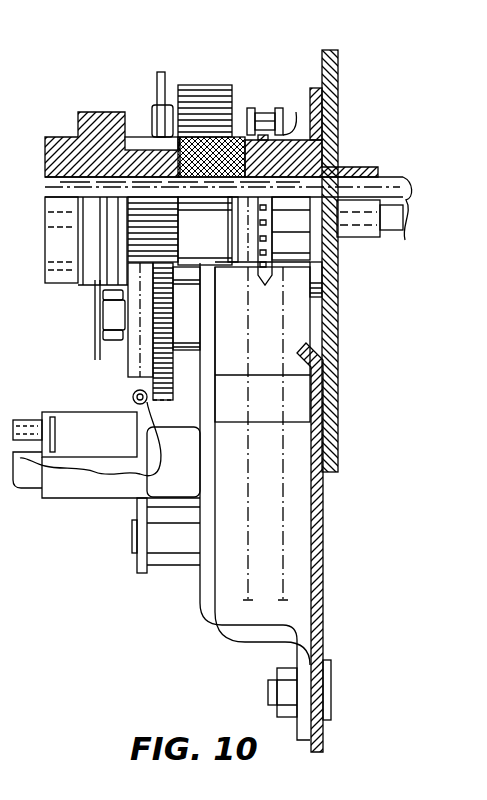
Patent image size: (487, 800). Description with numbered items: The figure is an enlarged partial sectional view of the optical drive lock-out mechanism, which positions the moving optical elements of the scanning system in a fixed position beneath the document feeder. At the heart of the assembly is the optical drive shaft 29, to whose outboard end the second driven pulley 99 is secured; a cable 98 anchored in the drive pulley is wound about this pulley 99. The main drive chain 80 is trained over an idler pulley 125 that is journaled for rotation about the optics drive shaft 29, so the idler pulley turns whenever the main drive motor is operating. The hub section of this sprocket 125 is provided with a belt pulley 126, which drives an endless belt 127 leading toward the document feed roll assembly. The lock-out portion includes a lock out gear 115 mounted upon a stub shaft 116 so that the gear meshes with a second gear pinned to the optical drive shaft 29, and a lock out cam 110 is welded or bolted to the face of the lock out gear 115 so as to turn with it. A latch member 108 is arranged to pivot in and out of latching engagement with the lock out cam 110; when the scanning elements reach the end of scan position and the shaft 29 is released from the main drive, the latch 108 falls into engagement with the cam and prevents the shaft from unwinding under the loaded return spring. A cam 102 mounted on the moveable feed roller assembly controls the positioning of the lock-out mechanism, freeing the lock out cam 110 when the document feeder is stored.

The optical drive shaft 29 is at (228, 217).
The main drive chain 80 is at (257, 108).
The cable 98 is at (100, 305).
The second driven pulley 99 is at (78, 125).
The cam 102 is at (157, 93).
The latch member 108 is at (78, 412).
The lock out cam 110 is at (127, 365).
The lock out gear 115 is at (168, 386).
The stub shaft 116 is at (178, 200).
The idler pulley 125 is at (297, 112).
The belt pulley 126 is at (240, 107).
The endless belt 127 is at (182, 88).